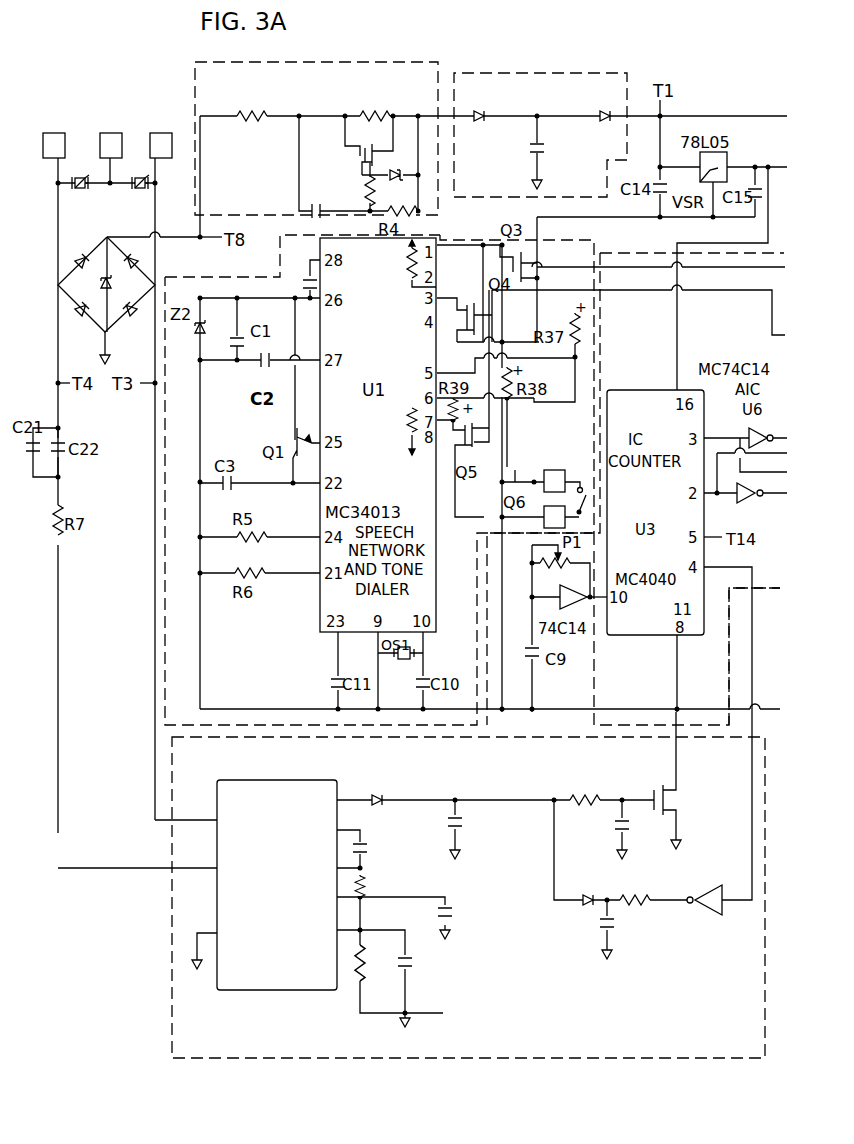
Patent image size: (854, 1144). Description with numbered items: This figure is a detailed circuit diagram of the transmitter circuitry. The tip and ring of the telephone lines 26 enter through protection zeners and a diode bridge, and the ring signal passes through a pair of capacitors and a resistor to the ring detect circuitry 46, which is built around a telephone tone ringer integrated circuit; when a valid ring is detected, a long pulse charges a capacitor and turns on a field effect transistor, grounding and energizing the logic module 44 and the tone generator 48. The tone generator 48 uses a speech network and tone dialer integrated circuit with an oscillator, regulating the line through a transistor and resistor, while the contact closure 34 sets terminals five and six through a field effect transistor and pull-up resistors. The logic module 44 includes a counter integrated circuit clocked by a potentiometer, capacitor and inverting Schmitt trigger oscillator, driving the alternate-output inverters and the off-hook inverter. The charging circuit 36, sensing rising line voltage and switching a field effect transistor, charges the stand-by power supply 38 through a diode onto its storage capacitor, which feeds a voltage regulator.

The telephone lines 26 is at (158, 212).
The charging circuit 36 is at (438, 63).
The stand-by power supply 38 is at (531, 74).
The contact closure 34 is at (579, 487).
The logic module 44 is at (752, 592).
The ring detect circuitry 46 is at (172, 1013).
The tone generator 48 is at (163, 706).